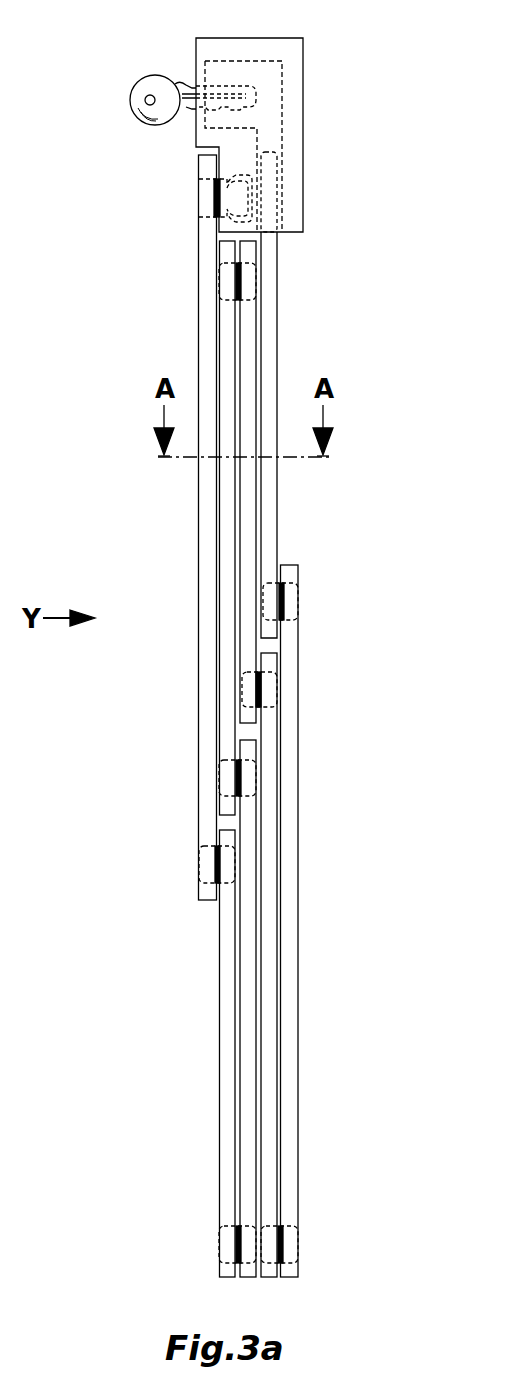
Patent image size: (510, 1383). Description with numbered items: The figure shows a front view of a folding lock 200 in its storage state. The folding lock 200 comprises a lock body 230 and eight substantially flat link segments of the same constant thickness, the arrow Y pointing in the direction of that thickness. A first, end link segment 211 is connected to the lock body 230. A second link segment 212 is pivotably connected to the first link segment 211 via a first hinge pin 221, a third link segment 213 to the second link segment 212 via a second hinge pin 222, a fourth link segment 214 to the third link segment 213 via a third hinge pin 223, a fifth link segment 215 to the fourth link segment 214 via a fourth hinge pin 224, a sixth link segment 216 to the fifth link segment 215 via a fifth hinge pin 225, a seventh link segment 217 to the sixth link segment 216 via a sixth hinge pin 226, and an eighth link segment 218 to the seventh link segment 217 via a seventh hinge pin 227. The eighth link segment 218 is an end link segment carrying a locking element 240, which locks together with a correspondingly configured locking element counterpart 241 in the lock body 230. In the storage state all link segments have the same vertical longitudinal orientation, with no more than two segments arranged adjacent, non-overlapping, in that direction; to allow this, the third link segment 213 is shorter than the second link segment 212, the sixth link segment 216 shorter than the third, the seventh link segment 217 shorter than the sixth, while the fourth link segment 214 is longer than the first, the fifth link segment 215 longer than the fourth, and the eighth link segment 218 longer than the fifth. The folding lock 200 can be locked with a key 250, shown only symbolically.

The folding lock 200 is at (137, 694).
The first link segment 211 is at (270, 327).
The second link segment 212 is at (288, 658).
The third link segment 213 is at (272, 788).
The fourth link segment 214 is at (250, 357).
The fifth link segment 215 is at (227, 342).
The sixth link segment 216 is at (248, 1050).
The seventh link segment 217 is at (229, 1020).
The eighth link segment 218 is at (205, 535).
The first hinge pin 221 is at (285, 605).
The second hinge pin 222 is at (287, 1243).
The third hinge pin 223 is at (262, 688).
The fourth hinge pin 224 is at (235, 283).
The fifth hinge pin 225 is at (237, 773).
The sixth hinge pin 226 is at (218, 1243).
The seventh hinge pin 227 is at (213, 862).
The lock body 230 is at (300, 101).
The locking element 240 is at (235, 192).
The locking element counterpart 241 is at (248, 172).
The key 250 is at (135, 88).